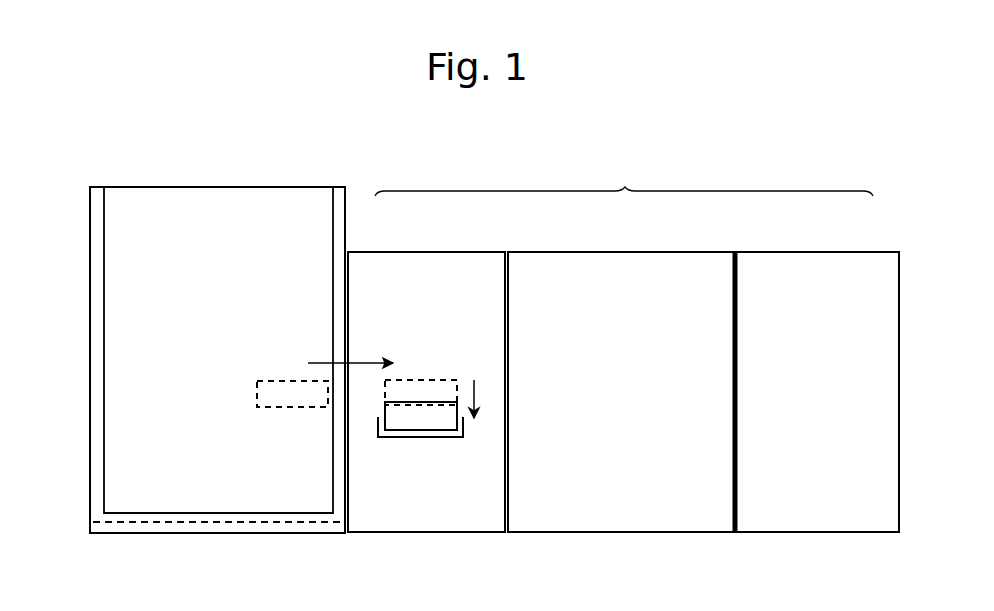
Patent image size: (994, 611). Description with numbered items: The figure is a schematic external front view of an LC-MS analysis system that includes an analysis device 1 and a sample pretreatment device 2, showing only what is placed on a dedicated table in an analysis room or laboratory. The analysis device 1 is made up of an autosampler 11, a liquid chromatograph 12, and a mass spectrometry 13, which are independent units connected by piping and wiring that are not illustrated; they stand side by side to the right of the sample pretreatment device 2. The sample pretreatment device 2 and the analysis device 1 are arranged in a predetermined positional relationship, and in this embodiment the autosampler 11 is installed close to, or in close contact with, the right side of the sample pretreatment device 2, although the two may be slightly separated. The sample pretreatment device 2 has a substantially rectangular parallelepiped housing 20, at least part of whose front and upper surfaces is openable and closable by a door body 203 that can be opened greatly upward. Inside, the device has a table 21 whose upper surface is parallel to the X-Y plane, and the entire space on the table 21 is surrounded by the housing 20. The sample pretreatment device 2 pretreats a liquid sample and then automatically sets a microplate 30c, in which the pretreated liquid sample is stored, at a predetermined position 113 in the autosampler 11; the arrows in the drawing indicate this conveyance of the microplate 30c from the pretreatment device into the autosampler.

The analysis device 1 is at (624, 180).
The sample pretreatment device 2 is at (277, 186).
The housing 20 is at (90, 278).
The table 21 is at (120, 523).
The door body 203 is at (115, 217).
The microplate 30c is at (297, 407).
The autosampler 11 is at (462, 250).
The liquid chromatograph 12 is at (663, 250).
The mass spectrometry 13 is at (850, 250).
The predetermined position 113 is at (427, 440).